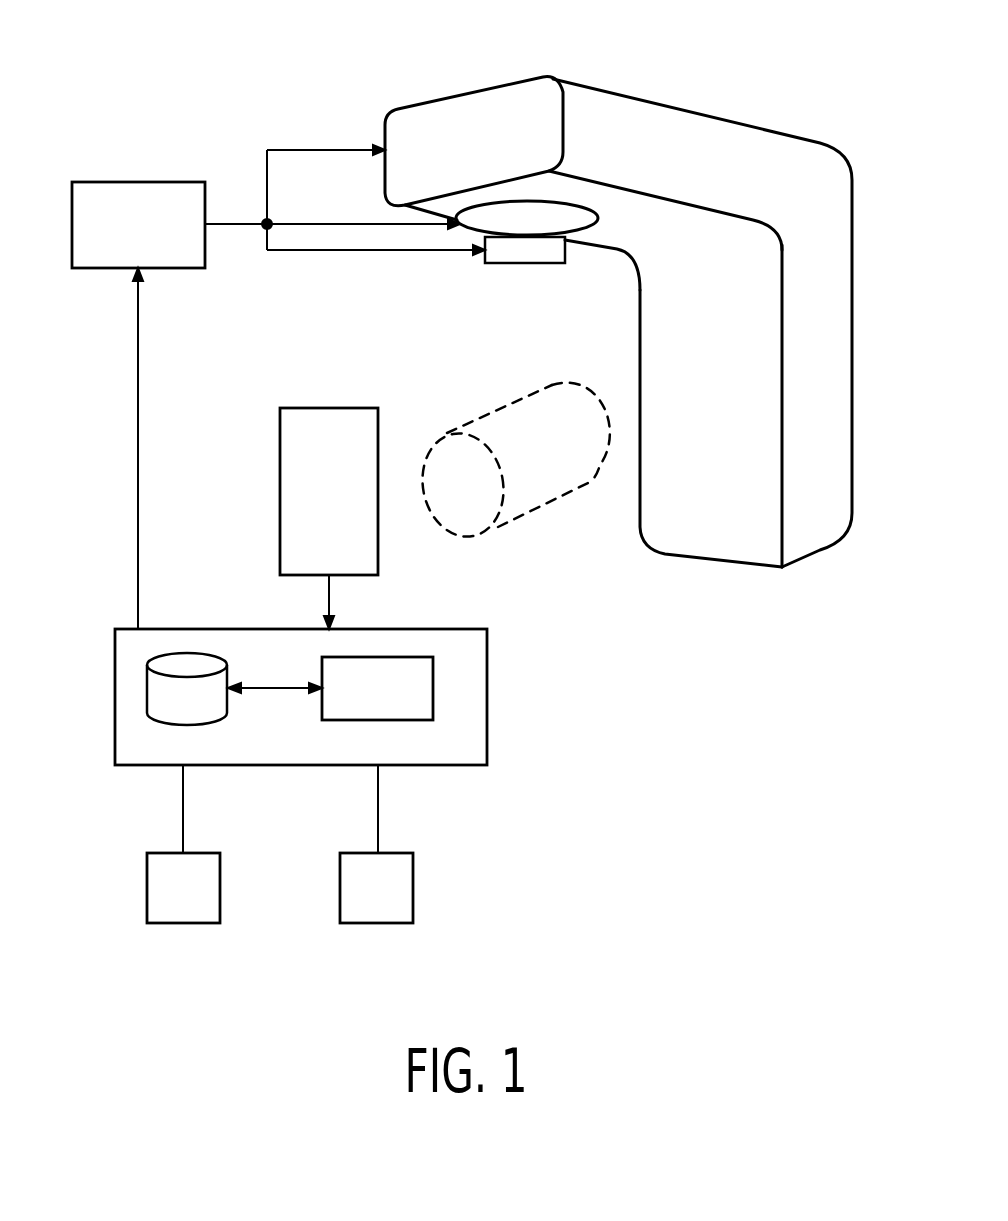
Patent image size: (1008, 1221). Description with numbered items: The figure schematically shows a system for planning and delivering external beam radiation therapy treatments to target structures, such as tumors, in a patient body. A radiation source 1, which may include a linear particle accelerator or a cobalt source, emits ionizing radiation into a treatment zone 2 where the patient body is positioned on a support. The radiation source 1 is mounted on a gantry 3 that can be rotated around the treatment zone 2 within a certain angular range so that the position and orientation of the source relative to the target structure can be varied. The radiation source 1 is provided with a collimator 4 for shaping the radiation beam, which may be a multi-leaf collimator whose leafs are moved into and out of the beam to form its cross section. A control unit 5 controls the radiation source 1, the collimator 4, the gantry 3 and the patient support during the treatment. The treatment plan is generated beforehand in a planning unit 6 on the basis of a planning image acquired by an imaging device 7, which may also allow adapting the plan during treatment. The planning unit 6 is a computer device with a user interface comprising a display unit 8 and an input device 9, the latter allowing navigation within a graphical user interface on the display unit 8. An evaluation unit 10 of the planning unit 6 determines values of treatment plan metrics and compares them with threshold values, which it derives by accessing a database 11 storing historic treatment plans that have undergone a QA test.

The radiation source 1 is at (573, 222).
The treatment zone 2 is at (527, 497).
The gantry 3 is at (667, 105).
The collimator 4 is at (523, 253).
The control unit 5 is at (128, 240).
The planning unit 6 is at (487, 697).
The imaging device 7 is at (319, 504).
The display unit 8 is at (173, 905).
The input device 9 is at (367, 905).
The evaluation unit 10 is at (360, 704).
The database 11 is at (183, 663).